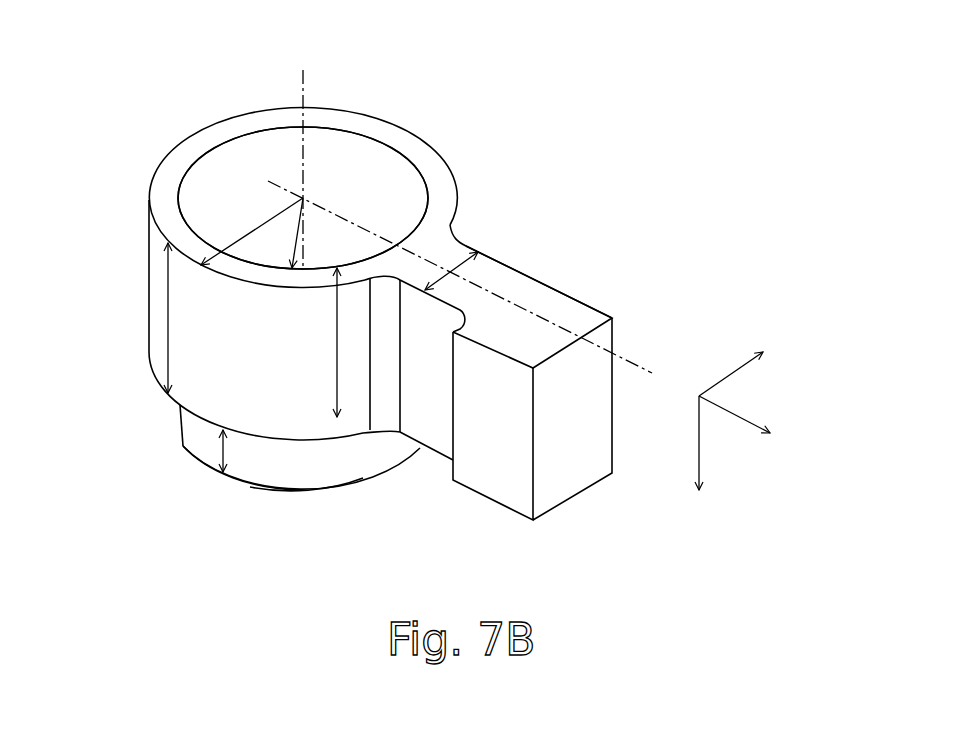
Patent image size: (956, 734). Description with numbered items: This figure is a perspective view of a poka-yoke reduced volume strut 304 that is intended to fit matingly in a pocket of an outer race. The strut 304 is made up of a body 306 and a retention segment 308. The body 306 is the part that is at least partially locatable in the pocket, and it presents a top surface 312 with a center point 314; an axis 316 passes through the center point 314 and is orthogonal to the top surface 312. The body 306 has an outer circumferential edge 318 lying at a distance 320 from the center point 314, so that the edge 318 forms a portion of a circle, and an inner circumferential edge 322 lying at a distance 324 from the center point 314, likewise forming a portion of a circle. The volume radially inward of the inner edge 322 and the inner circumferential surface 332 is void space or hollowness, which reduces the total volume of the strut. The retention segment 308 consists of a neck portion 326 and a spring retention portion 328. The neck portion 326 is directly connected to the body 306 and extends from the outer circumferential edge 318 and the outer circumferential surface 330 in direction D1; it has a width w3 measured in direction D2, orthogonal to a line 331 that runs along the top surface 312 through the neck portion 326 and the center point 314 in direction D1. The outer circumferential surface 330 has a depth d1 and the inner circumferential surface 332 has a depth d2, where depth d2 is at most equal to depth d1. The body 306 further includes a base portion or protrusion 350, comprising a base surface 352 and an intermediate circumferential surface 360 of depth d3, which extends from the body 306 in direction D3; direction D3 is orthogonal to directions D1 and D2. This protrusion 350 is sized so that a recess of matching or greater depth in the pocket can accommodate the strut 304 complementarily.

The strut 304 is at (543, 216).
The body 306 is at (208, 495).
The retention segment 308 is at (576, 280).
The top surface 312 is at (160, 197).
The center point 314 is at (313, 190).
The axis 316 is at (303, 100).
The outer circumferential edge 318 is at (163, 157).
The distance 320 is at (247, 225).
The inner circumferential edge 322 is at (217, 153).
The distance 324 is at (283, 230).
The neck portion 326 is at (437, 303).
The spring retention portion 328 is at (500, 353).
The outer circumferential surface 330 is at (158, 283).
The line 331 is at (640, 360).
The inner circumferential surface 332 is at (398, 172).
The base portion 350 is at (290, 497).
The base surface 352 is at (327, 495).
The intermediate circumferential surface 360 is at (180, 417).
The depth d1 is at (168, 323).
The depth d2 is at (337, 341).
The depth d3 is at (226, 478).
The width w3 is at (455, 262).
The direction D1 is at (747, 420).
The direction D2 is at (737, 372).
The direction D3 is at (698, 445).